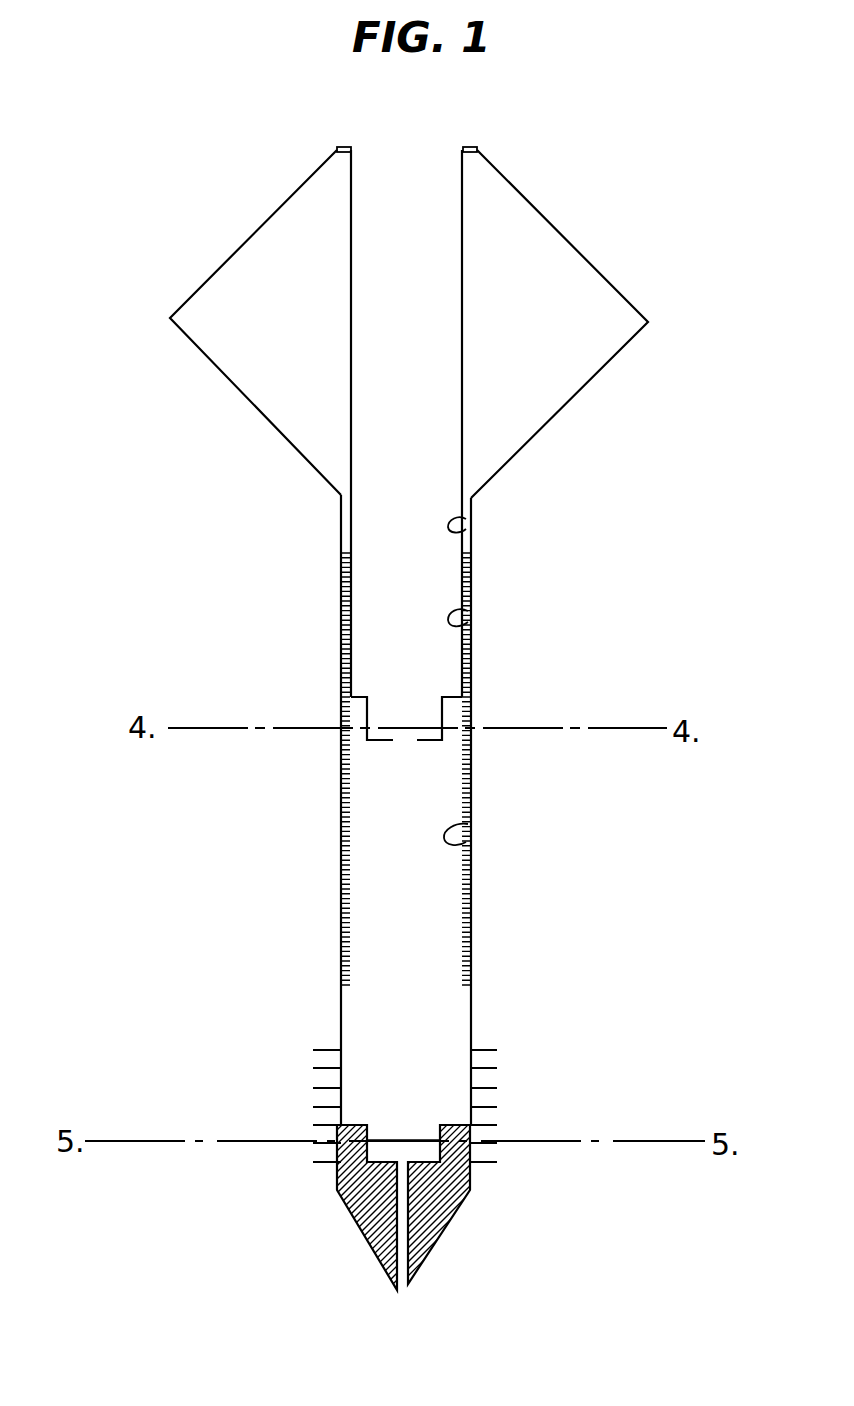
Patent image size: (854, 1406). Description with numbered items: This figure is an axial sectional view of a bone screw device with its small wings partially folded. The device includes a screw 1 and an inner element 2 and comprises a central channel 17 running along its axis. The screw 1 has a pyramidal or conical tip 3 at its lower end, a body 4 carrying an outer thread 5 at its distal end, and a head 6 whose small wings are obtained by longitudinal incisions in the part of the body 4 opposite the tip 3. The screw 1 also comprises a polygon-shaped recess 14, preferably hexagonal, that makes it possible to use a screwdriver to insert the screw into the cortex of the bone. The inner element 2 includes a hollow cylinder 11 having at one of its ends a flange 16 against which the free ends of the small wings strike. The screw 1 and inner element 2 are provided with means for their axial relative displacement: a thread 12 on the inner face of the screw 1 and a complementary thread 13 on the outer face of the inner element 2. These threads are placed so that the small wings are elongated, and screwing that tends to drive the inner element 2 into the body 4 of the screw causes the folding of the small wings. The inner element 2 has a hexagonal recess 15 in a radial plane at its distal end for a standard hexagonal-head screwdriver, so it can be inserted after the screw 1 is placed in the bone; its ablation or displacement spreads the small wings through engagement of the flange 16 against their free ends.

The screw 1 is at (292, 803).
The inner element 2 is at (442, 454).
The tip 3 is at (353, 1228).
The body 4 is at (471, 923).
The outer thread 5 is at (497, 1090).
The head 6 is at (614, 247).
The hollow cylinder 11 is at (466, 521).
The thread 12 is at (468, 825).
The complementary thread 13 is at (468, 612).
The polygon-shaped recess 14 is at (380, 1132).
The hexagonal recess 15 is at (393, 720).
The flange 16 is at (478, 148).
The central channel 17 is at (404, 1286).